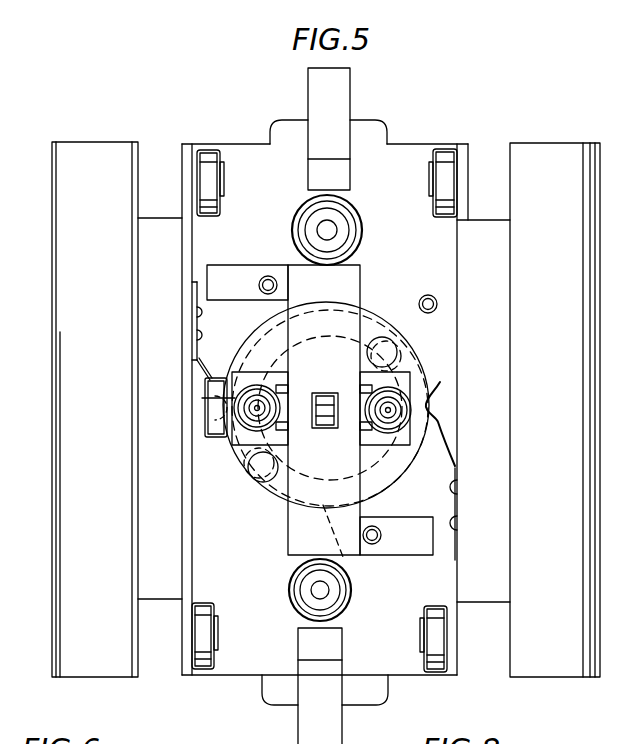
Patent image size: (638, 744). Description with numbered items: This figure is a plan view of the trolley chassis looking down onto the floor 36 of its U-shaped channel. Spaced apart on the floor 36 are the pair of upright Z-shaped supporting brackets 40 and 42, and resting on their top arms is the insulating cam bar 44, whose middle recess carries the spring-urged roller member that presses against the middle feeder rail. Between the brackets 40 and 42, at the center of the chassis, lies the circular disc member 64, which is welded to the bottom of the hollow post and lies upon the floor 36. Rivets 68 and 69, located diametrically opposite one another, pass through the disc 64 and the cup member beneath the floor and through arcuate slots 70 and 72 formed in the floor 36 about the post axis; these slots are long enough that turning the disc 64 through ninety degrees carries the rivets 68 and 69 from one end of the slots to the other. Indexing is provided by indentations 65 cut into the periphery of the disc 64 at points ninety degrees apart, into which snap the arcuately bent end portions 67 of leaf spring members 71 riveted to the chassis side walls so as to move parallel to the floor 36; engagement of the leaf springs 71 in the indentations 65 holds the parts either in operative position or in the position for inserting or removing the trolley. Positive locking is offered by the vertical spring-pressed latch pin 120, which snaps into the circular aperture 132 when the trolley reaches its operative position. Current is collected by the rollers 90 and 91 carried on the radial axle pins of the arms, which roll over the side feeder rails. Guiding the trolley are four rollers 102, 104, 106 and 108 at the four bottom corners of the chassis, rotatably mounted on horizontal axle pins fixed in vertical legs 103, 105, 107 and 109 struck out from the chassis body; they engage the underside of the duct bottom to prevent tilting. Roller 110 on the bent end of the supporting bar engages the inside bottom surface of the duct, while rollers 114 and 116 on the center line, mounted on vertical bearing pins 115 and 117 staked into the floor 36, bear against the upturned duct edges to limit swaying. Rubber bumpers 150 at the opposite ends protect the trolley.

The floor 36 is at (250, 158).
The Z-shaped supporting bracket 40 is at (238, 275).
The Z-shaped supporting bracket 42 is at (424, 540).
The insulating cam bar 44 is at (296, 533).
The circular disc member 64 is at (368, 312).
The indentations 65 is at (440, 428).
The arcuately bent end portions 67 is at (412, 410).
The rivet 68 is at (254, 466).
The rivet 69 is at (394, 352).
The arcuate slot 70 is at (384, 492).
The leaf spring members 71 is at (200, 367).
The arcuate slot 72 is at (266, 341).
The roller 90 is at (230, 398).
The roller 91 is at (433, 390).
The roller 102 is at (196, 672).
The vertical leg 103 is at (183, 658).
The roller 104 is at (437, 672).
The vertical leg 105 is at (458, 663).
The roller 106 is at (208, 150).
The vertical leg 107 is at (182, 145).
The roller 108 is at (446, 152).
The vertical leg 109 is at (464, 156).
The roller 110 is at (206, 424).
The roller 114 is at (308, 598).
The vertical bearing pin 115 is at (322, 592).
The roller 116 is at (348, 222).
The vertical bearing pin 117 is at (322, 228).
The latch pin 120 is at (437, 305).
The circular aperture 132 is at (438, 300).
The rubber bumpers 150 is at (350, 74).